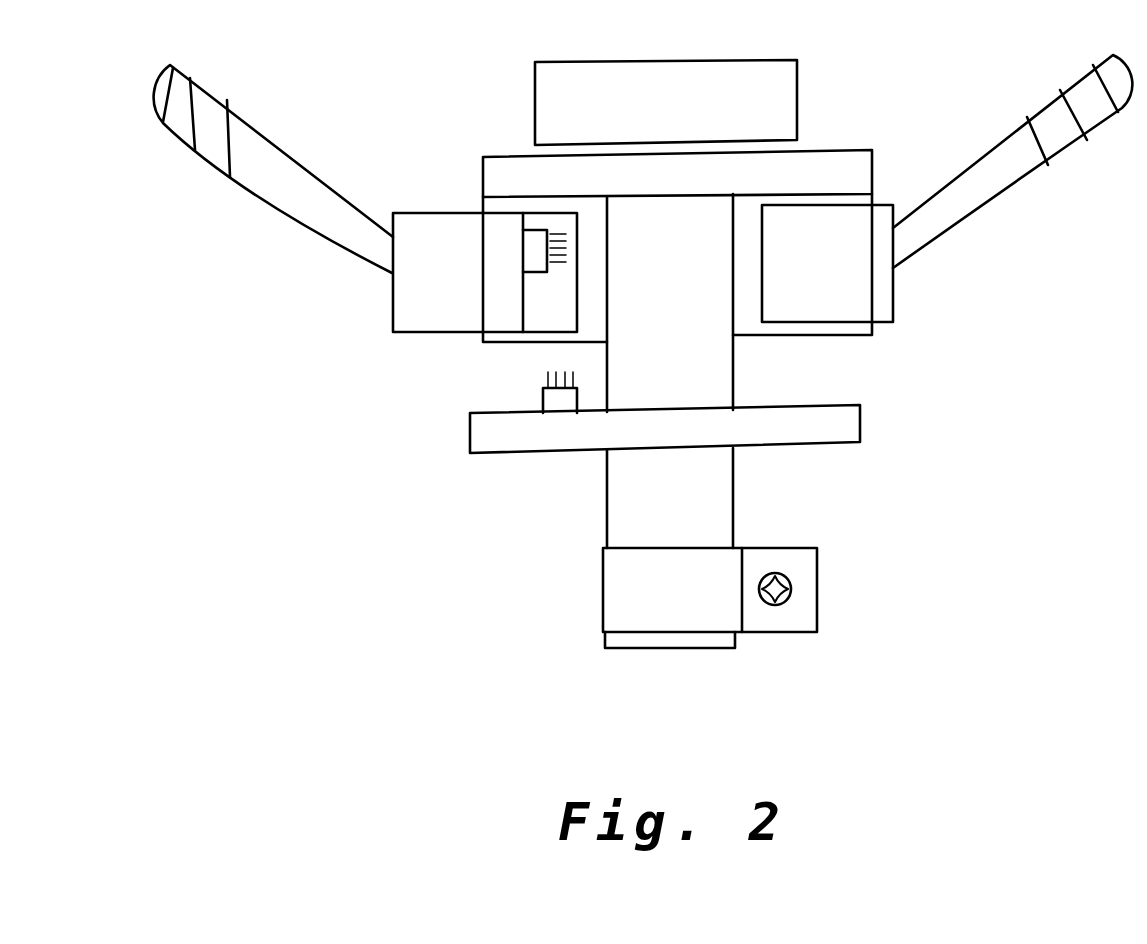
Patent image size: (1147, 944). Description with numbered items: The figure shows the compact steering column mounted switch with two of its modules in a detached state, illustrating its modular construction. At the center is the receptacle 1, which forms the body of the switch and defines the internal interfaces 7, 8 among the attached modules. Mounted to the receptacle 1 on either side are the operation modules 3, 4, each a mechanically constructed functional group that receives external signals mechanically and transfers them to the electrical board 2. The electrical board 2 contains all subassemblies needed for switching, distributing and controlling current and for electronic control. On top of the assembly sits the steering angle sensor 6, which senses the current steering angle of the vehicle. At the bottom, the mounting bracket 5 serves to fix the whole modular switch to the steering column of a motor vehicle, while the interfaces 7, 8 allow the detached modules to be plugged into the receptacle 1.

The receptacle 1 is at (712, 213).
The electrical board 2 is at (827, 437).
The operation module 3 is at (417, 227).
The operation module 4 is at (883, 298).
The mounting bracket 5 is at (780, 620).
The steering angle sensor 6 is at (550, 90).
The internal interface 7 is at (540, 393).
The internal interface 8 is at (533, 230).